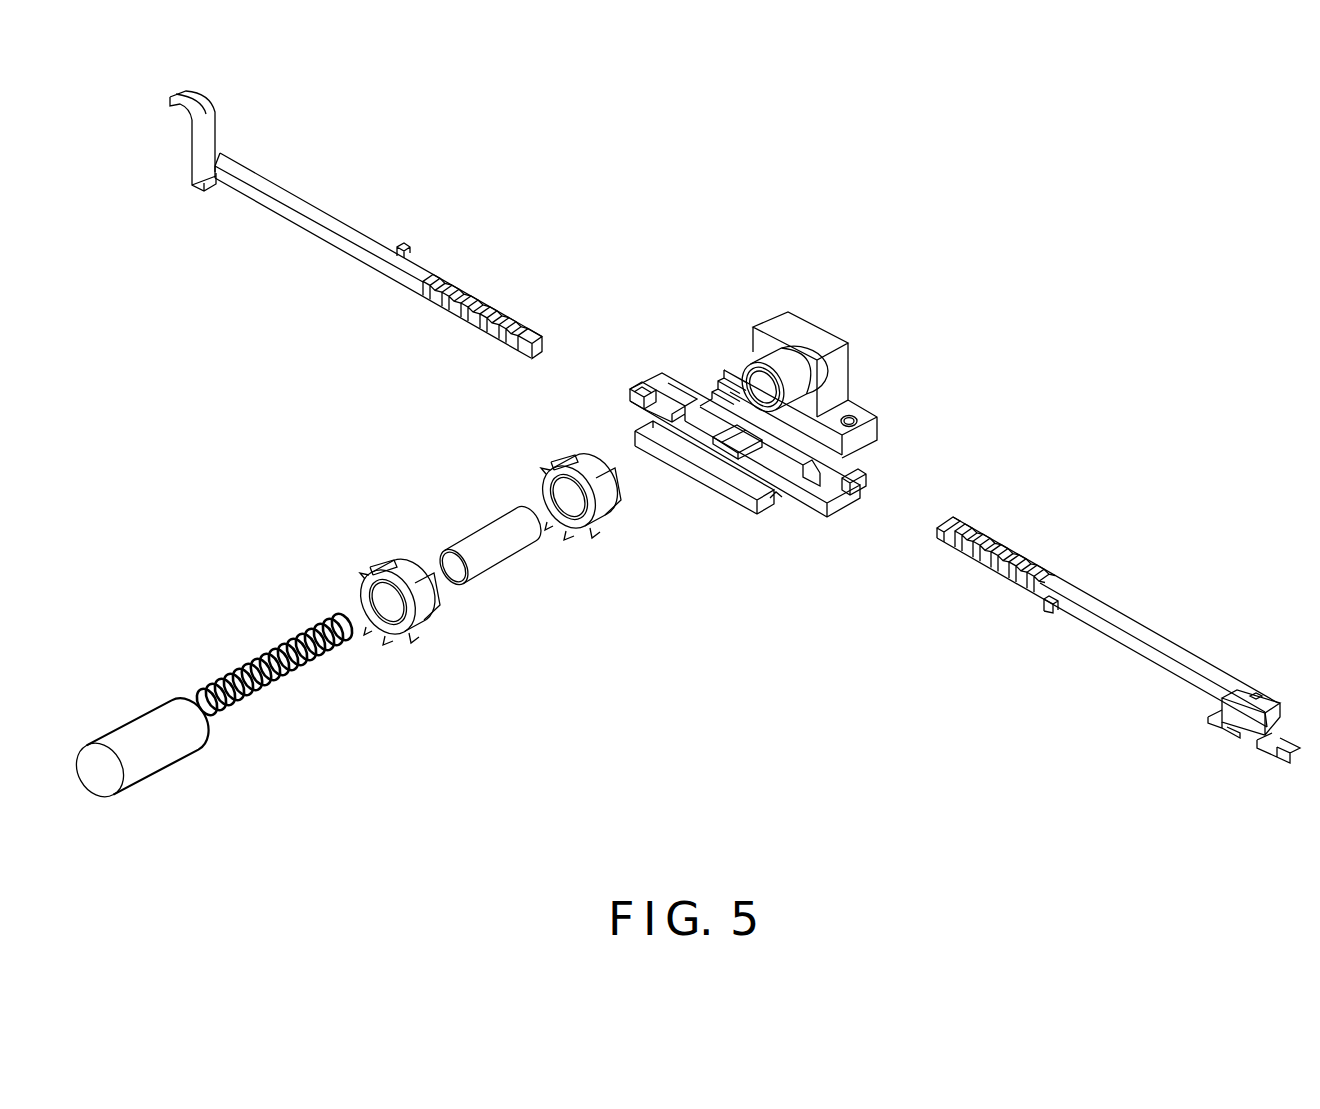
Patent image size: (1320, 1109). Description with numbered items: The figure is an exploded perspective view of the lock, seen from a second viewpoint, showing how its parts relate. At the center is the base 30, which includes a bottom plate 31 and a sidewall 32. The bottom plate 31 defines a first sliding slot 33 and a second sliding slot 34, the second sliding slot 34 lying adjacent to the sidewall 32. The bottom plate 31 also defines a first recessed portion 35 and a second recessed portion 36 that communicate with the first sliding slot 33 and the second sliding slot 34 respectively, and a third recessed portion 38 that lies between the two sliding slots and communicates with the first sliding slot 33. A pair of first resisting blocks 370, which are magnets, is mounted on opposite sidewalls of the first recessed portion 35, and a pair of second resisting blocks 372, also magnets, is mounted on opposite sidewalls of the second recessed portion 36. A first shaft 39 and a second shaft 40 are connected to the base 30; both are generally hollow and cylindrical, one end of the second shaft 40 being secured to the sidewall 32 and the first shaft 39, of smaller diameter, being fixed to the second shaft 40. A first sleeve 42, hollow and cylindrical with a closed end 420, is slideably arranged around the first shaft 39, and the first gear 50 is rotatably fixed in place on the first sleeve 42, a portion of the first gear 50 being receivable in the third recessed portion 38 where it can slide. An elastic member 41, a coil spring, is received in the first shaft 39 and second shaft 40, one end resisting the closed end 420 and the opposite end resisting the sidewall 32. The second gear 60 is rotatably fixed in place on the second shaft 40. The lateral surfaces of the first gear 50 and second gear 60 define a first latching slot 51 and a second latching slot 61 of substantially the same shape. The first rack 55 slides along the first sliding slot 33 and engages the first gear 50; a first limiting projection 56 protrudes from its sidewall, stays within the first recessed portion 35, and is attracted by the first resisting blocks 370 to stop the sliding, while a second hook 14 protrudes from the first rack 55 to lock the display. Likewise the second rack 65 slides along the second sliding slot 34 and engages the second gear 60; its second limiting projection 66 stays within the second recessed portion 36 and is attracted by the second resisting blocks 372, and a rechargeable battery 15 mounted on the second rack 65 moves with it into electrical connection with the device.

The second hook 14 is at (208, 133).
The rechargeable battery 15 is at (1243, 702).
The base 30 is at (770, 443).
The bottom plate 31 is at (743, 483).
The sidewall 32 is at (843, 384).
The first sliding slot 33 is at (787, 493).
The second sliding slot 34 is at (838, 474).
The first recessed portion 35 is at (658, 410).
The second recessed portion 36 is at (838, 476).
The third recessed portion 38 is at (738, 442).
The first shaft 39 is at (481, 543).
The second shaft 40 is at (768, 365).
The elastic member 41 is at (241, 676).
The first sleeve 42 is at (131, 779).
The first gear 50 is at (386, 607).
The first latching slot 51 is at (416, 600).
The first rack 55 is at (290, 207).
The first limiting projection 56 is at (402, 246).
The second gear 60 is at (539, 473).
The second latching slot 61 is at (587, 470).
The second rack 65 is at (1144, 637).
The second limiting projection 66 is at (1053, 608).
The first resisting blocks 370 is at (640, 393).
The second resisting blocks 372 is at (848, 492).
The closed end 420 is at (102, 777).